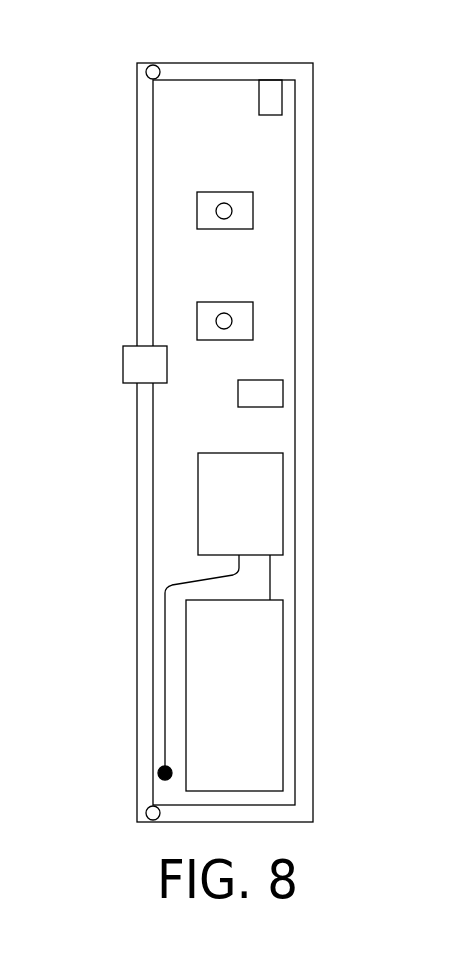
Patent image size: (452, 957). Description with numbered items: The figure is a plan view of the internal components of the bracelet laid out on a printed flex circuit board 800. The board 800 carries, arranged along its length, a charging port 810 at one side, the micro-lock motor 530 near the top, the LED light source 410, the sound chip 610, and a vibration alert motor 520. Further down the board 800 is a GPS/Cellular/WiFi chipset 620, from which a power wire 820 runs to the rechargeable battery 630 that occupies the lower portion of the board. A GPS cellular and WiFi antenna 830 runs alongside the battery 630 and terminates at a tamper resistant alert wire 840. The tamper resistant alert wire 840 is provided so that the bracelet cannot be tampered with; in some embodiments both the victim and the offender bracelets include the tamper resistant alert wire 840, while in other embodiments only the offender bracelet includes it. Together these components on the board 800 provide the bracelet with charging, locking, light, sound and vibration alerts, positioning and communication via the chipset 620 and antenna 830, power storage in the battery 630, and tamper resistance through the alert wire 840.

The printed flex circuit board 800 is at (190, 62).
The micro-lock motor 530 is at (272, 87).
The LED light source 410 is at (239, 192).
The sound chip 610 is at (239, 302).
The charging port 810 is at (127, 361).
The vibration alert motor 520 is at (263, 385).
The GPS/Cellular/WiFi chipset 620 is at (265, 502).
The power wire 820 is at (272, 574).
The GPS cellular and WiFi antenna 830 is at (163, 666).
The tamper resistant alert wire 840 is at (152, 760).
The rechargeable battery 630 is at (256, 702).